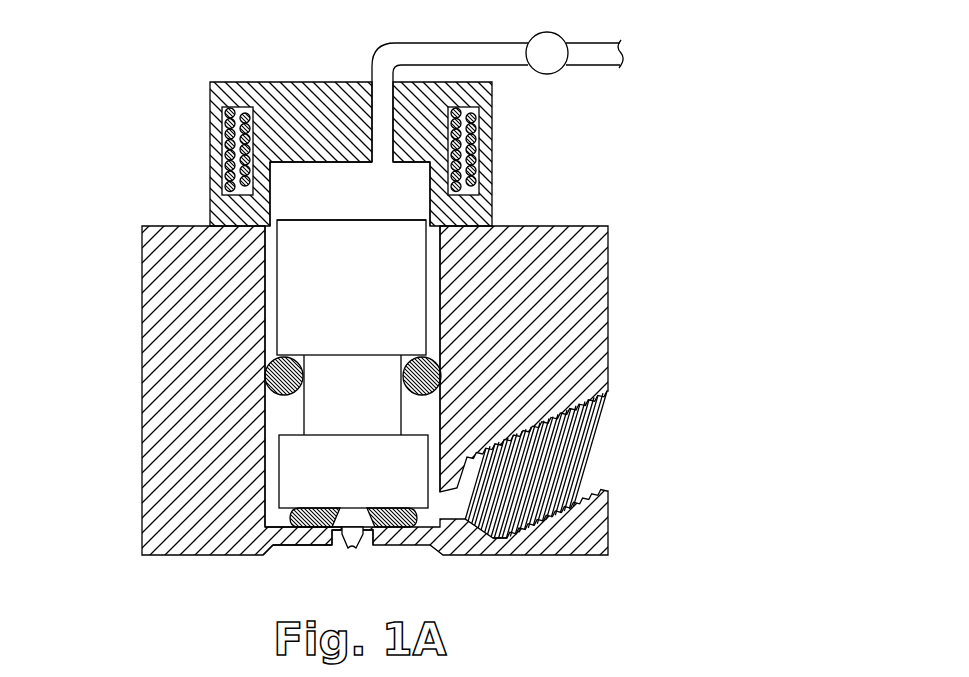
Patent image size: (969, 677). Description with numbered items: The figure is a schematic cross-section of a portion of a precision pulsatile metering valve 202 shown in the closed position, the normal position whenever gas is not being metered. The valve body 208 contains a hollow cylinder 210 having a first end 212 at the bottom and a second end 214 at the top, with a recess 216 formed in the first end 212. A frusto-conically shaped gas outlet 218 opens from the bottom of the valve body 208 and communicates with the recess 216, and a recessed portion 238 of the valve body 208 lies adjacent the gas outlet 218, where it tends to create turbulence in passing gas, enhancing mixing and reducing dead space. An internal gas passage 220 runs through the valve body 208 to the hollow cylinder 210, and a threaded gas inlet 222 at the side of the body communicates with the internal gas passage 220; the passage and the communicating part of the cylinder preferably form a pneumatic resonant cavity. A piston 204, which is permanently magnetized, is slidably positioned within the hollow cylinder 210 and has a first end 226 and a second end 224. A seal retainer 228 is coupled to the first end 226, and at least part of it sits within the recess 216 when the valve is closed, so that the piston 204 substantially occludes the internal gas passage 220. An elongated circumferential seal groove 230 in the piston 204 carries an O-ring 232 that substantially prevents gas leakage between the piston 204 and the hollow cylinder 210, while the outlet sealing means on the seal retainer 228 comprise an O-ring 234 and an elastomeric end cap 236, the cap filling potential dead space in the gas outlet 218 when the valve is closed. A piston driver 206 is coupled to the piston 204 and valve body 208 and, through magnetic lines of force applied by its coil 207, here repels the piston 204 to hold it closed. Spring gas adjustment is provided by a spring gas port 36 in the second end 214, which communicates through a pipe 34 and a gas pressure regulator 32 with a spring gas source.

The precision pulsatile metering valve 202 is at (382, 307).
The piston 204 is at (383, 237).
The piston driver 206 is at (236, 82).
The coil 207 is at (225, 152).
The valve body 208 is at (141, 357).
The hollow cylinder 210 is at (440, 240).
The first end 212 is at (258, 528).
The second end 214 is at (323, 163).
The recess 216 is at (352, 548).
The frusto-conically shaped gas outlet 218 is at (338, 543).
The internal gas passage 220 is at (508, 535).
The gas inlet 222 is at (626, 435).
The second end 224 is at (352, 220).
The first end 226 is at (285, 513).
The seal retainer 228 is at (353, 517).
The circumferential seal groove 230 is at (295, 432).
The O-ring 232 is at (283, 398).
The O-ring 234 is at (387, 507).
The elastomeric end cap 236 is at (357, 545).
The recessed portion 238 is at (283, 545).
The gas pressure regulator 32 is at (550, 75).
The pipe 34 is at (478, 43).
The spring gas port 36 is at (354, 54).